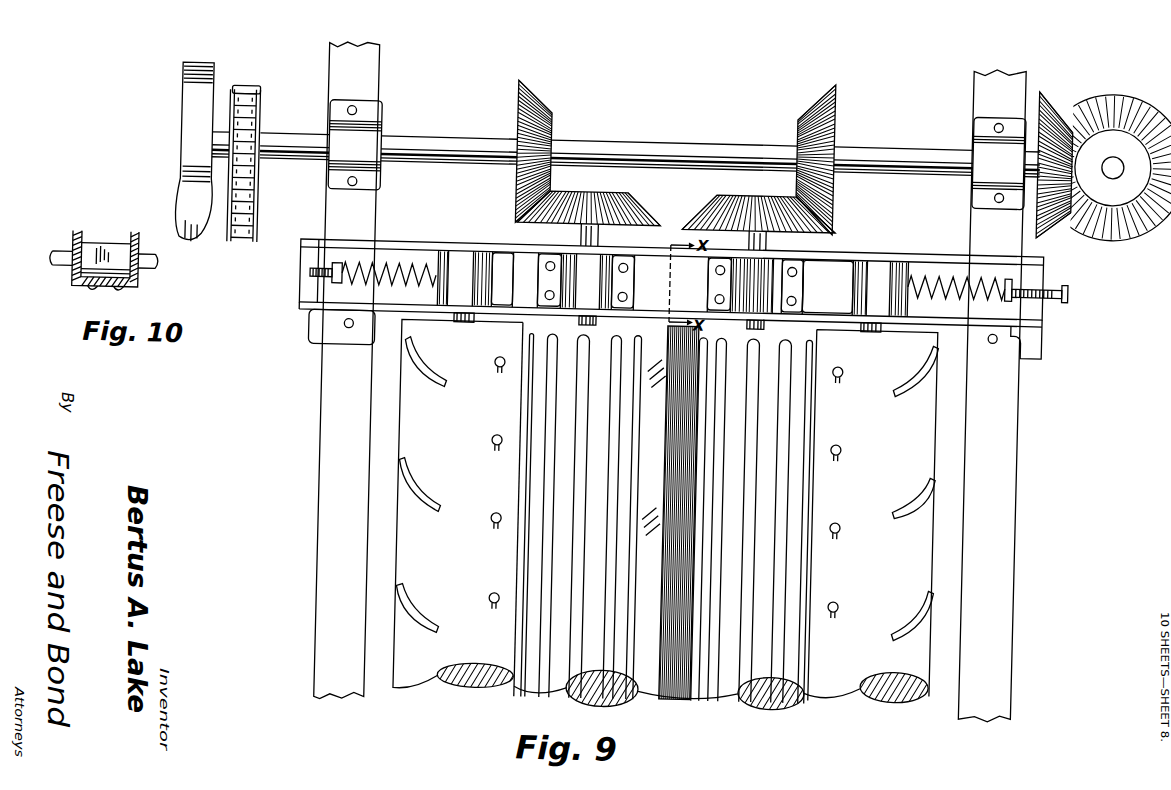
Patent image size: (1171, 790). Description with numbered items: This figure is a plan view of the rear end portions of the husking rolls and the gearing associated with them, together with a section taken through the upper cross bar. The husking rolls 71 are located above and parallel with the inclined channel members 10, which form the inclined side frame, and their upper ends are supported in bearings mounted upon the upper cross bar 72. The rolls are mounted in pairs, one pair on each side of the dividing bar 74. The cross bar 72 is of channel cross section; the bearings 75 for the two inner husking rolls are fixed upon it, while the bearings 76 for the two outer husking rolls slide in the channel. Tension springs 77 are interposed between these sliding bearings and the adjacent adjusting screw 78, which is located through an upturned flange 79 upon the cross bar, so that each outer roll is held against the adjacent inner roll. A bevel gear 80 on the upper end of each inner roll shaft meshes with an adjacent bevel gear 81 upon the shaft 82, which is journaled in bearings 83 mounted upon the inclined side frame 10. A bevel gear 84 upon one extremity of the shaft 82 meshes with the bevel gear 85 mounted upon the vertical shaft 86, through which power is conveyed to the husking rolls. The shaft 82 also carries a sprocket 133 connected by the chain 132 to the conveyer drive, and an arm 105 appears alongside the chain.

In FIG. 9, the inclined channel members 10 is at (327, 398).
In FIG. 9, the husking rolls 71 is at (512, 668).
In FIG. 9, the upper cross bar 72 is at (938, 258).
In FIG. 10, the upper cross bar 72 is at (139, 293).
In FIG. 9, the dividing bar 74 is at (661, 690).
In FIG. 9, the bearings 75 is at (708, 277).
In FIG. 10, the bearings 75 is at (118, 253).
In FIG. 9, the bearings 76 is at (507, 293).
In FIG. 9, the tension springs 77 is at (987, 254).
In FIG. 9, the adjusting screw 78 is at (1025, 268).
In FIG. 9, the upturned flange 79 is at (1041, 306).
In FIG. 9, the bevel gear 80 is at (700, 209).
In FIG. 9, the bevel gear 81 is at (556, 122).
In FIG. 9, the shaft 82 is at (708, 148).
In FIG. 9, the bearings 83 is at (372, 130).
In FIG. 9, the bevel gear 84 is at (1048, 101).
In FIG. 9, the bevel gear 85 is at (1134, 92).
In FIG. 9, the vertical shaft 86 is at (1113, 157).
In FIG. 9, the arm 105 is at (190, 153).
In FIG. 9, the chain 132 is at (253, 233).
In FIG. 9, the sprocket 133 is at (254, 119).